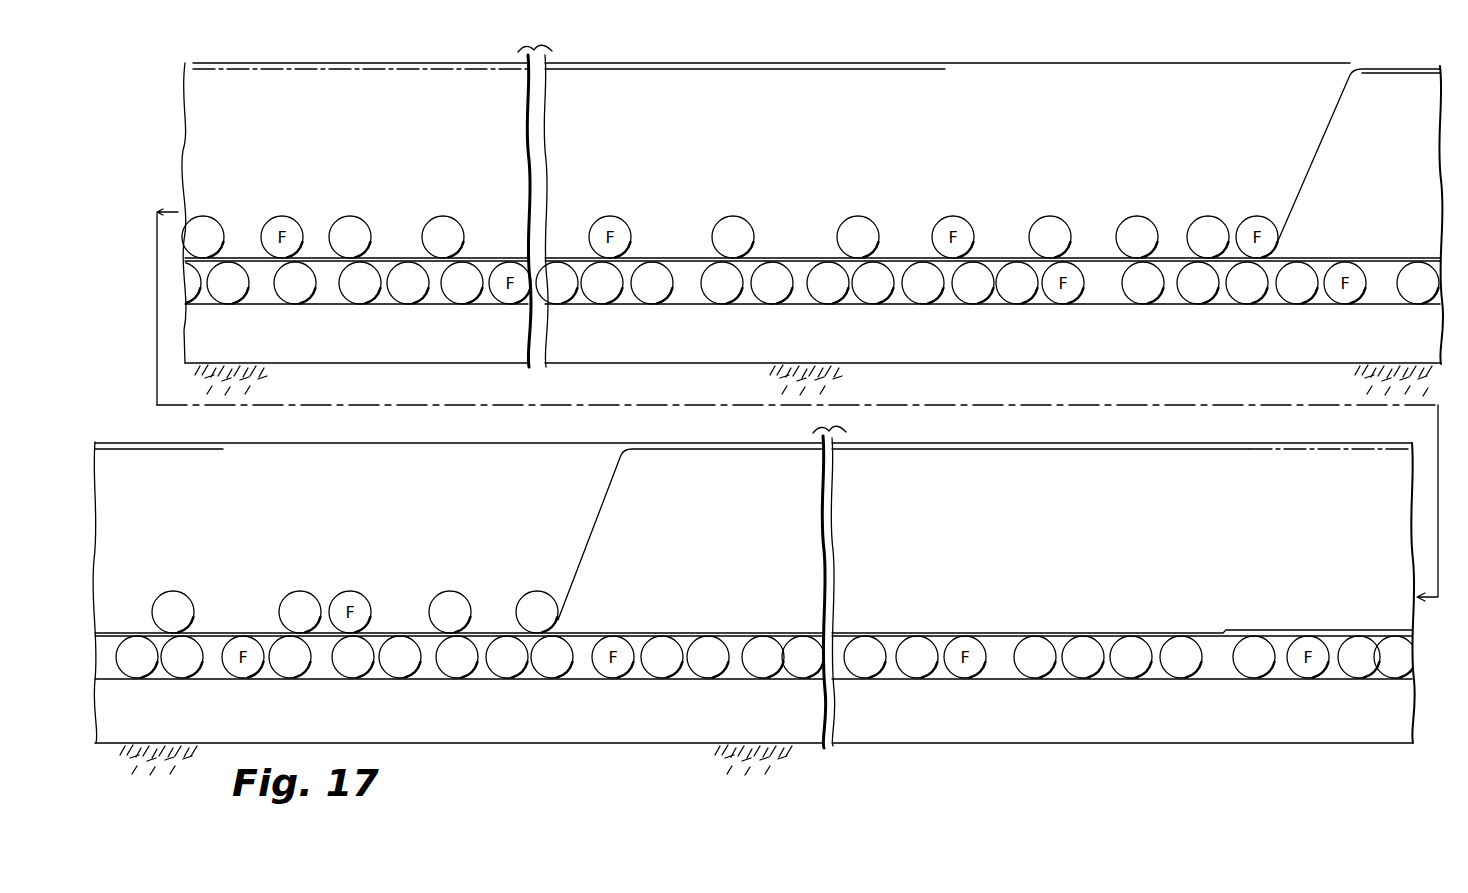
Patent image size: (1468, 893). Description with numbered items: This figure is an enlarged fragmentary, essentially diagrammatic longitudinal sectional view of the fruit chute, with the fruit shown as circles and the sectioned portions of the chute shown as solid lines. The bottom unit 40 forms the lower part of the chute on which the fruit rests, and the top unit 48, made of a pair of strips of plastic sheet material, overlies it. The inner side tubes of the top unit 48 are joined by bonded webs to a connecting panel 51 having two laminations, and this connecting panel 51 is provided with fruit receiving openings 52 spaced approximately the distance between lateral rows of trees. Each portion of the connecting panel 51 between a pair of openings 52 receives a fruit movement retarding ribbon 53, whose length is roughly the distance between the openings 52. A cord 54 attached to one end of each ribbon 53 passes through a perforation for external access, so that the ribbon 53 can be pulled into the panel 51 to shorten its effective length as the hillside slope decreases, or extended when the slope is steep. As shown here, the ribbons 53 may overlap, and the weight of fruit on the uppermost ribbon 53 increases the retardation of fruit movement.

The bottom unit 40 is at (378, 372).
The top unit 48 is at (168, 152).
The connecting panel 51 is at (858, 66).
The fruit receiving openings 52 is at (965, 72).
The fruit movement retarding ribbon 53 is at (1322, 130).
The cord 54 is at (793, 43).